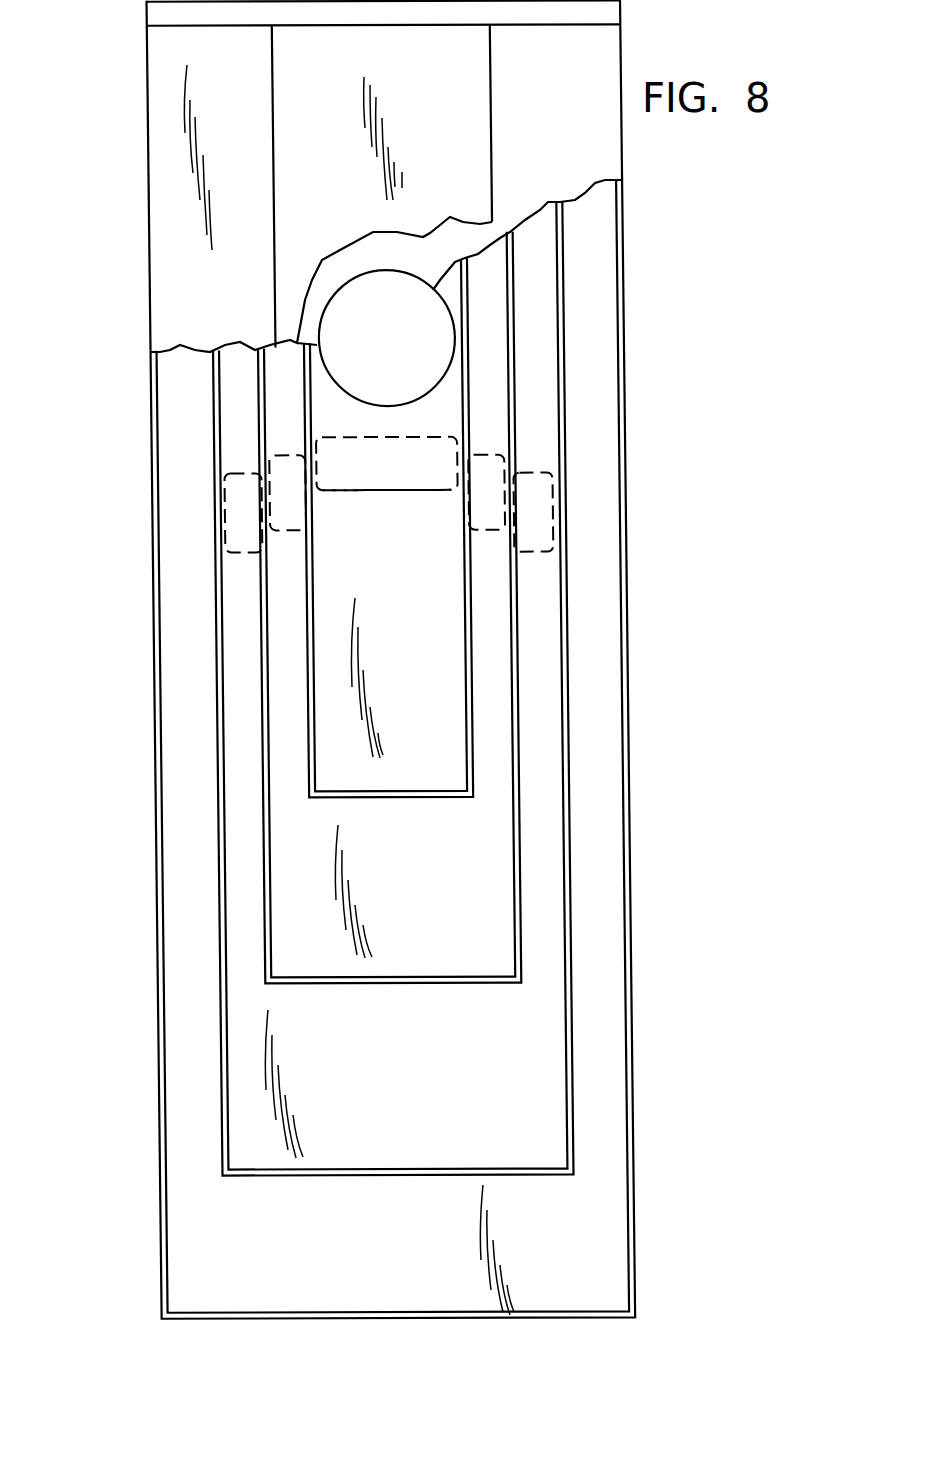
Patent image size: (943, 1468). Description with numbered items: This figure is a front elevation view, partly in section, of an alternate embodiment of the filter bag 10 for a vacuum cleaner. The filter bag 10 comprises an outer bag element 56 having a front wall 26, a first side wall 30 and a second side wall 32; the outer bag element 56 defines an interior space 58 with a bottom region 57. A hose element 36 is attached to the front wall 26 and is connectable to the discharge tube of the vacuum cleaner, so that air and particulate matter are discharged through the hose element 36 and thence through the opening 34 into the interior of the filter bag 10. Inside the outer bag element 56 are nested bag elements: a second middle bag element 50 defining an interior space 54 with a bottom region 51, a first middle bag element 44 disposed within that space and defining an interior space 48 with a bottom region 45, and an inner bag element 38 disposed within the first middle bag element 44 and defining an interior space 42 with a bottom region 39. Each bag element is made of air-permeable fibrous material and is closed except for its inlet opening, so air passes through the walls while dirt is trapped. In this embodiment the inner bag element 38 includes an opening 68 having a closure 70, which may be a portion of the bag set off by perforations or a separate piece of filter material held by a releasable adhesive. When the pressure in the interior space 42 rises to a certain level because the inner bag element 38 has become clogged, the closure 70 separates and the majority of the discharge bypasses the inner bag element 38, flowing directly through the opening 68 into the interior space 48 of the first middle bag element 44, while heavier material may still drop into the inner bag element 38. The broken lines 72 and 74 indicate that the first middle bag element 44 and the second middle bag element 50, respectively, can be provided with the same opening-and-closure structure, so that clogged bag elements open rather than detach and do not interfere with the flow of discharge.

The filter bag 10 is at (133, 120).
The front wall 26 is at (170, 207).
The first side wall 30 is at (148, 275).
The second side wall 32 is at (621, 157).
The opening 34 is at (353, 280).
The hose element 36 is at (278, 303).
The inner bag element 38 is at (472, 642).
The bottom region 39 is at (443, 773).
The interior space 42 is at (410, 669).
The first middle bag element 44 is at (520, 802).
The bottom region 45 is at (490, 958).
The interior space 48 is at (409, 869).
The second middle bag element 50 is at (570, 920).
The bottom region 51 is at (547, 1155).
The interior space 54 is at (409, 1080).
The outer bag element 56 is at (635, 1218).
The bottom region 57 is at (602, 1300).
The interior space 58 is at (411, 1254).
The opening 68 is at (382, 490).
The closure 70 is at (437, 456).
The broken lines 72 is at (270, 513).
The broken lines 74 is at (553, 505).